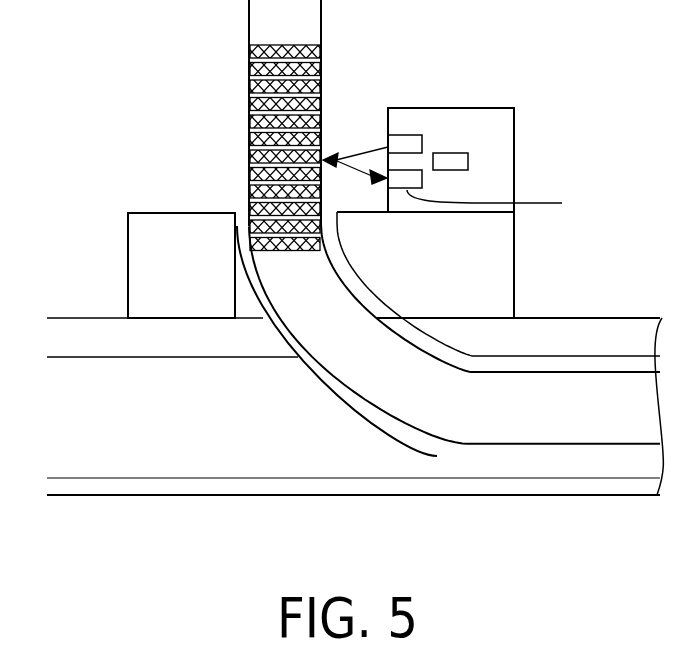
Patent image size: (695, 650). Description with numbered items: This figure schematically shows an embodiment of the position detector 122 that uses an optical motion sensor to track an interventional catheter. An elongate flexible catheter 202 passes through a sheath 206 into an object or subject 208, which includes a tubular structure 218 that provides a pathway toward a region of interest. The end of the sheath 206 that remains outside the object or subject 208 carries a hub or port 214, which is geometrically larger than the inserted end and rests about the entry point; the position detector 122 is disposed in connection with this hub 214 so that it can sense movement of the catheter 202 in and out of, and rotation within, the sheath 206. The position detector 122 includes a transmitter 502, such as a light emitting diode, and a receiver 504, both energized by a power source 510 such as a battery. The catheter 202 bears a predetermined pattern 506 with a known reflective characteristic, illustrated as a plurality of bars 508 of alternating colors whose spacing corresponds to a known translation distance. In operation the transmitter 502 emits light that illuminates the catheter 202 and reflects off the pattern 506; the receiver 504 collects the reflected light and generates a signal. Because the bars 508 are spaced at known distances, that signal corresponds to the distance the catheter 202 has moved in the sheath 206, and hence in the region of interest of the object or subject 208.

The position detector 122 is at (514, 118).
The elongate flexible catheter 202 is at (249, 21).
The sheath 206 is at (330, 413).
The object or subject 208 is at (206, 495).
The hub or port 214 is at (128, 252).
The tubular structure 218 is at (125, 478).
The transmitter 502 is at (400, 135).
The receiver 504 is at (507, 202).
The predetermined pattern 506 is at (203, 98).
The bars 508 is at (249, 155).
The power source 510 is at (458, 153).